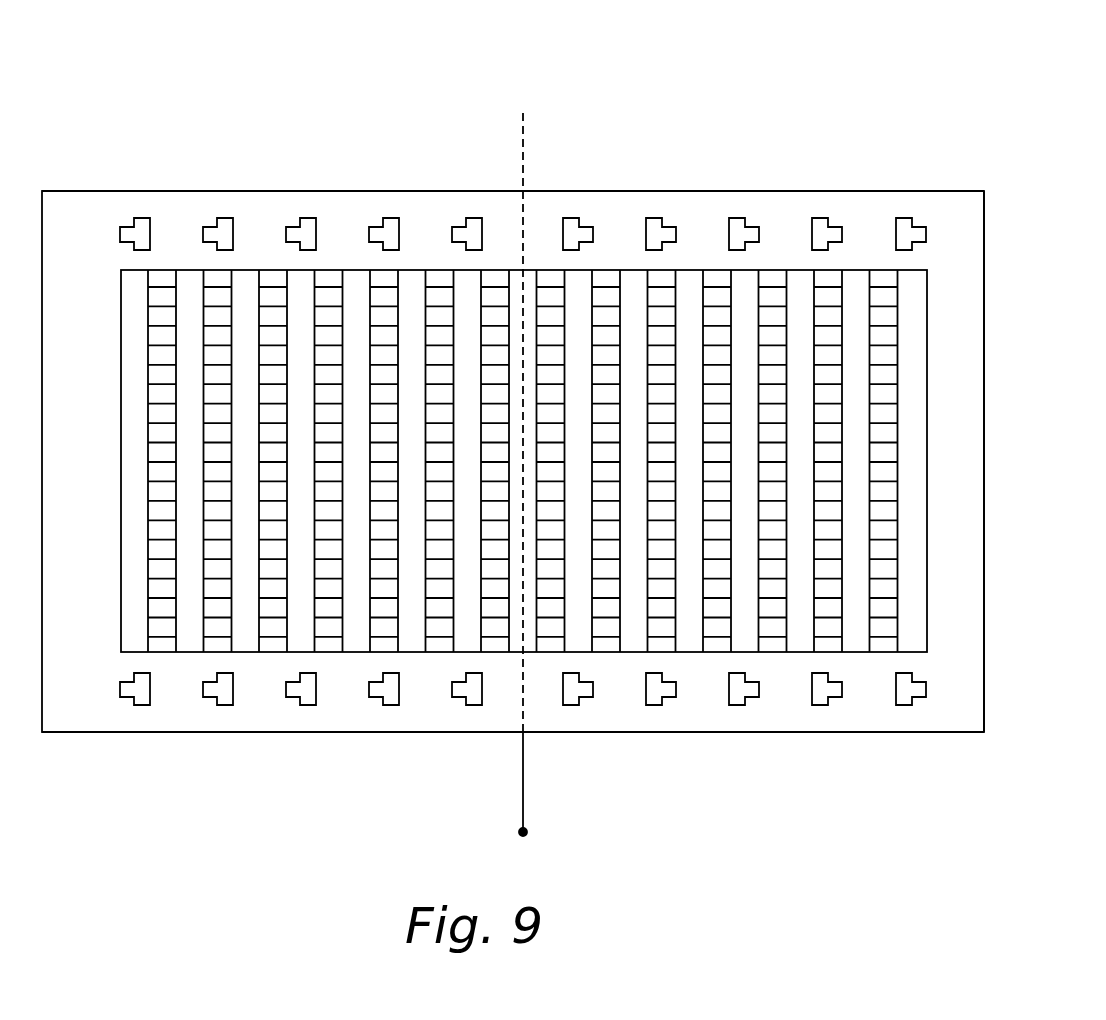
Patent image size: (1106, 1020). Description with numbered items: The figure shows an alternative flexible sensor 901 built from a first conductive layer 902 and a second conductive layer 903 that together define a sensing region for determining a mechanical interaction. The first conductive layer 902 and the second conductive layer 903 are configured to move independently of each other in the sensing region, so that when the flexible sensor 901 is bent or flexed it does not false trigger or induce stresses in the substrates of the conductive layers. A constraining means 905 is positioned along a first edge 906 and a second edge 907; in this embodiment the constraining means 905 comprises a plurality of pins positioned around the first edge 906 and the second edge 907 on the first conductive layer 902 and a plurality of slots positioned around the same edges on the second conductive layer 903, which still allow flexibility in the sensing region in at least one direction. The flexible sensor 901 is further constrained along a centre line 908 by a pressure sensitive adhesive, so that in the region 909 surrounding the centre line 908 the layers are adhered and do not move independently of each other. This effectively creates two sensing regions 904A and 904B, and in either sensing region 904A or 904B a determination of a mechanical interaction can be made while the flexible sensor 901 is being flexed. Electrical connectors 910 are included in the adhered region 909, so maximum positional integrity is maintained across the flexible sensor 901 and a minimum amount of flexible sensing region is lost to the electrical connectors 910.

The flexible sensor 901 is at (1009, 125).
The first conductive layer 902 is at (870, 201).
The second conductive layer 903 is at (980, 461).
The first sensing region 904A is at (275, 645).
The second sensing region 904B is at (807, 646).
The constraining means 905 is at (570, 224).
The first edge 906 is at (433, 190).
The second edge 907 is at (387, 731).
The centre line 908 is at (523, 152).
The region 909 is at (511, 677).
The electrical connectors 910 is at (519, 813).